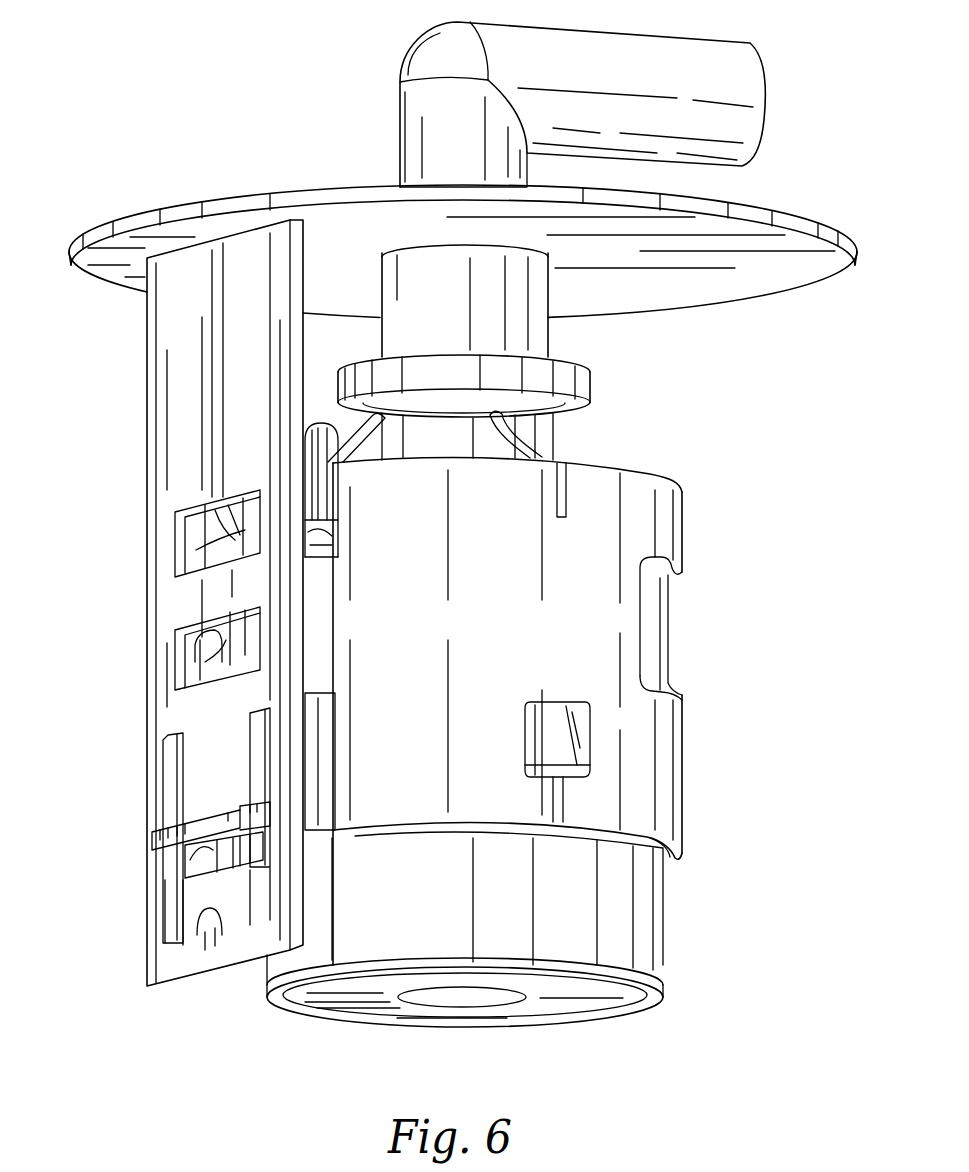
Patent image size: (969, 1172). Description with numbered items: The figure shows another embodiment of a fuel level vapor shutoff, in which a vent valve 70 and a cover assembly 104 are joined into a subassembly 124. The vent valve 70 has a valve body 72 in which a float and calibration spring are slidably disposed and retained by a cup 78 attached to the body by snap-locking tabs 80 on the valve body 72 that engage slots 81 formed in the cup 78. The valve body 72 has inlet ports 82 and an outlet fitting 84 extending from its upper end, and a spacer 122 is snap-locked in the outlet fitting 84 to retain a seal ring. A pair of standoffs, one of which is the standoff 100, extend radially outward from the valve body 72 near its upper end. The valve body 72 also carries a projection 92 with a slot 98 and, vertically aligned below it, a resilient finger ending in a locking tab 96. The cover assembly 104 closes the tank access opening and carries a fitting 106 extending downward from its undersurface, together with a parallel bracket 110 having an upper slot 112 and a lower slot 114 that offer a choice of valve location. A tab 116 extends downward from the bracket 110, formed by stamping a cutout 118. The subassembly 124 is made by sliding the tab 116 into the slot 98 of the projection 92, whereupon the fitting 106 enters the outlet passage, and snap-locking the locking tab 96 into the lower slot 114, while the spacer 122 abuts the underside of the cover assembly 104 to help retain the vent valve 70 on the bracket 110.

The vent valve 70 is at (680, 441).
The valve body 72 is at (683, 525).
The cup 78 is at (385, 1020).
The snap-locking tabs 80 is at (578, 742).
The slots 81 is at (532, 744).
The inlet ports 82 is at (648, 625).
The outlet fitting 84 is at (567, 380).
The projection 92 is at (170, 815).
The locking tab 96 is at (228, 650).
The slot 98 is at (212, 848).
The standoff 100 is at (326, 428).
The cover assembly 104 is at (165, 203).
The fitting 106 is at (400, 126).
The bracket 110 is at (150, 505).
The upper slot 112 is at (213, 548).
The lower slot 114 is at (220, 640).
The tab 116 is at (215, 763).
The cutout 118 is at (197, 935).
The spacer 122 is at (497, 324).
The subassembly 124 is at (206, 112).